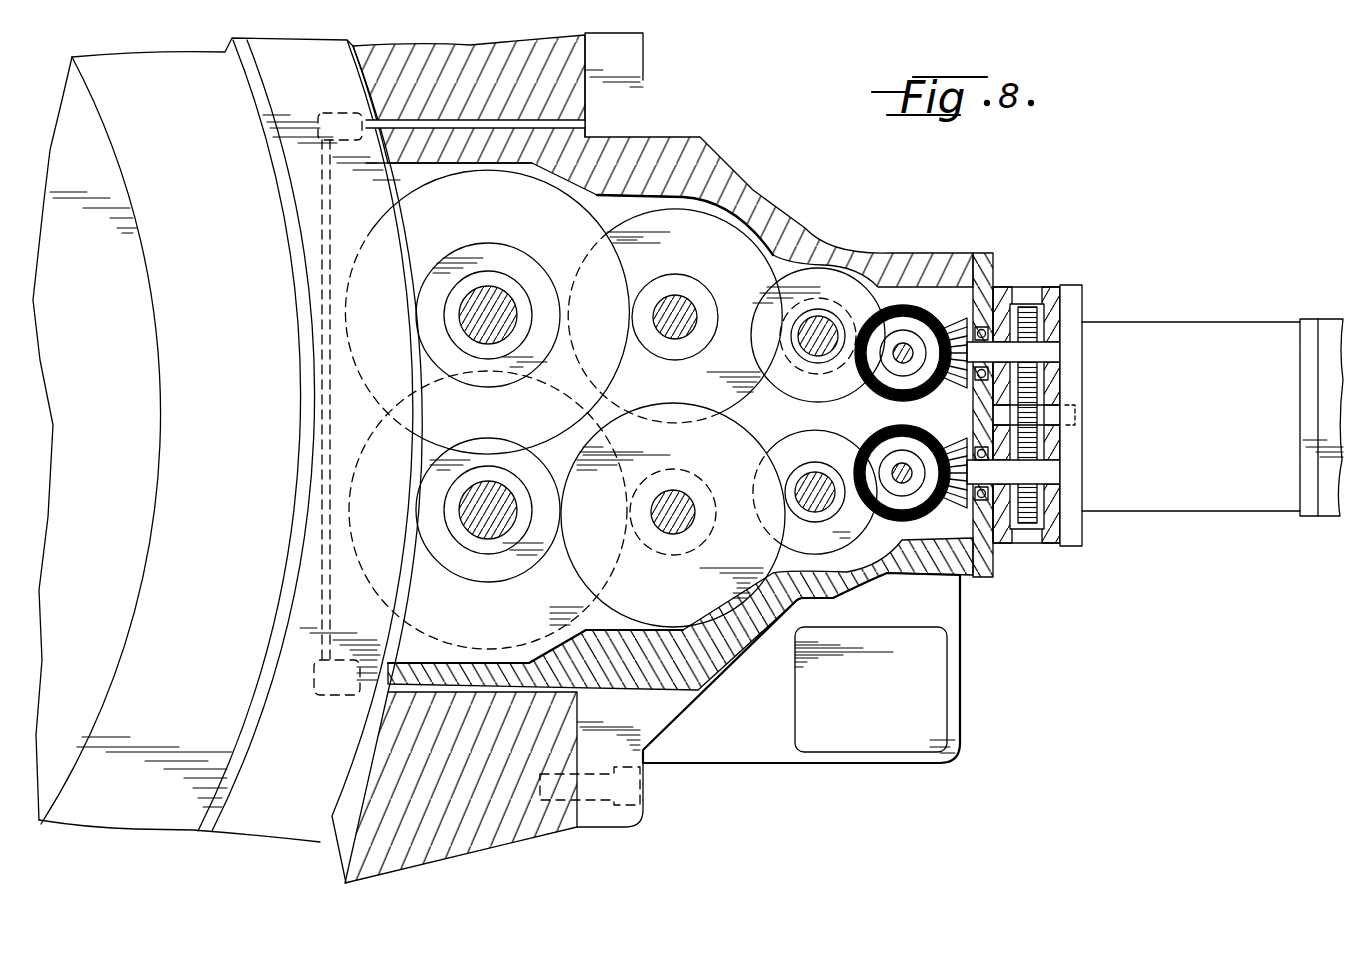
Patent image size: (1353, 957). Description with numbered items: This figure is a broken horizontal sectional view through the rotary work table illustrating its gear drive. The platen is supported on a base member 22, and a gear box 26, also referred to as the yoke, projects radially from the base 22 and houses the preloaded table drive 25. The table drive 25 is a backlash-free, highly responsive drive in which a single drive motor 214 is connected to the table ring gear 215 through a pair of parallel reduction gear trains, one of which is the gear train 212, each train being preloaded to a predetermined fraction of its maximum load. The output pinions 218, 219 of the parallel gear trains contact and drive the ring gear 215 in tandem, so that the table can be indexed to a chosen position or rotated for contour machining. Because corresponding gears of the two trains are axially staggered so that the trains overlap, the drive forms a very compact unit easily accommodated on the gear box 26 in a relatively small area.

The base member 22 is at (140, 822).
The gear box 26 is at (760, 198).
The table drive 25 is at (850, 268).
The reduction gear train 212 is at (928, 302).
The drive motor 214 is at (1300, 364).
The table ring gear 215 is at (407, 245).
The output pinion 218 is at (510, 250).
The output pinion 219 is at (458, 574).